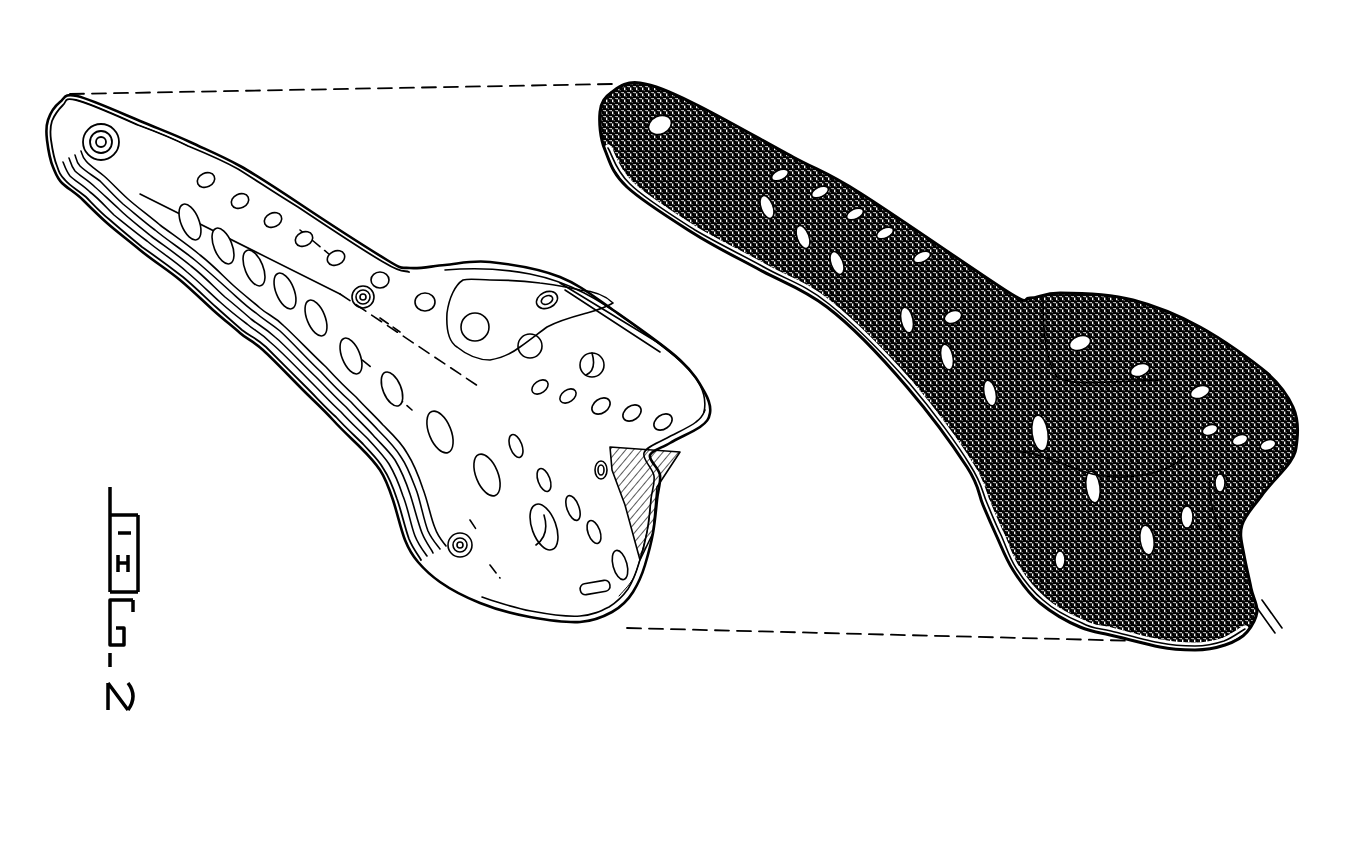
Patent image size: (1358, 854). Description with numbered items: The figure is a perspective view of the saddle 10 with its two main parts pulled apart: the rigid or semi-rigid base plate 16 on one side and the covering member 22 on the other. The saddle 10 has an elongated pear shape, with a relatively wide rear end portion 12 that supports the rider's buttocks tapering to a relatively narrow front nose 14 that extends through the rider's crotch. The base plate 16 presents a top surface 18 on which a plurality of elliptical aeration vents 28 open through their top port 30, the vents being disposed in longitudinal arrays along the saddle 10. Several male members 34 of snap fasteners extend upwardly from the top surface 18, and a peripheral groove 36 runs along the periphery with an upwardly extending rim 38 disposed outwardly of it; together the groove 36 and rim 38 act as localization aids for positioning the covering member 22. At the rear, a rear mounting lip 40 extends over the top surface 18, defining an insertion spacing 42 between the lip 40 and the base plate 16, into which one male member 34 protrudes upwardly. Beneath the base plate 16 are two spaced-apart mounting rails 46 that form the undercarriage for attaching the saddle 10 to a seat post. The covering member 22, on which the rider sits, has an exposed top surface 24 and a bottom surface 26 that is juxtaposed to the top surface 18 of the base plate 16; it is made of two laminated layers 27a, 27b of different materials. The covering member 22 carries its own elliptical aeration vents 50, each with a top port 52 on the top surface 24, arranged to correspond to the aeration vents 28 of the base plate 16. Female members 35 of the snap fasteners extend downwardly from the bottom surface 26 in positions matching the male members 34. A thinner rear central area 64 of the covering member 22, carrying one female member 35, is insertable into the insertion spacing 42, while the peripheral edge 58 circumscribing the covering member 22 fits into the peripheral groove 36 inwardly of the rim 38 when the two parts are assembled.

The saddle 10 is at (1022, 152).
The rear end portion 12 is at (626, 628).
The front nose 14 is at (108, 212).
The base plate 16 is at (553, 668).
The top surface 18 is at (497, 590).
The covering member 22 is at (950, 361).
The top surface 24 is at (1108, 636).
The bottom surface 26 is at (957, 447).
The layer 27a is at (1045, 608).
The layer 27b is at (1008, 615).
The aeration vents 28 is at (290, 308).
The top port 30 is at (273, 378).
The male member 34 is at (88, 150).
The female member 35 is at (660, 118).
The peripheral groove 36 is at (165, 272).
The upwardly extending rim 38 is at (128, 252).
The rear mounting lip 40 is at (668, 470).
The insertion spacing 42 is at (650, 556).
The mounting rails 46 is at (312, 392).
The aeration vents 50 is at (790, 172).
The top port 52 is at (1057, 300).
The peripheral edge 58 is at (822, 321).
The rear central area 64 is at (1250, 545).